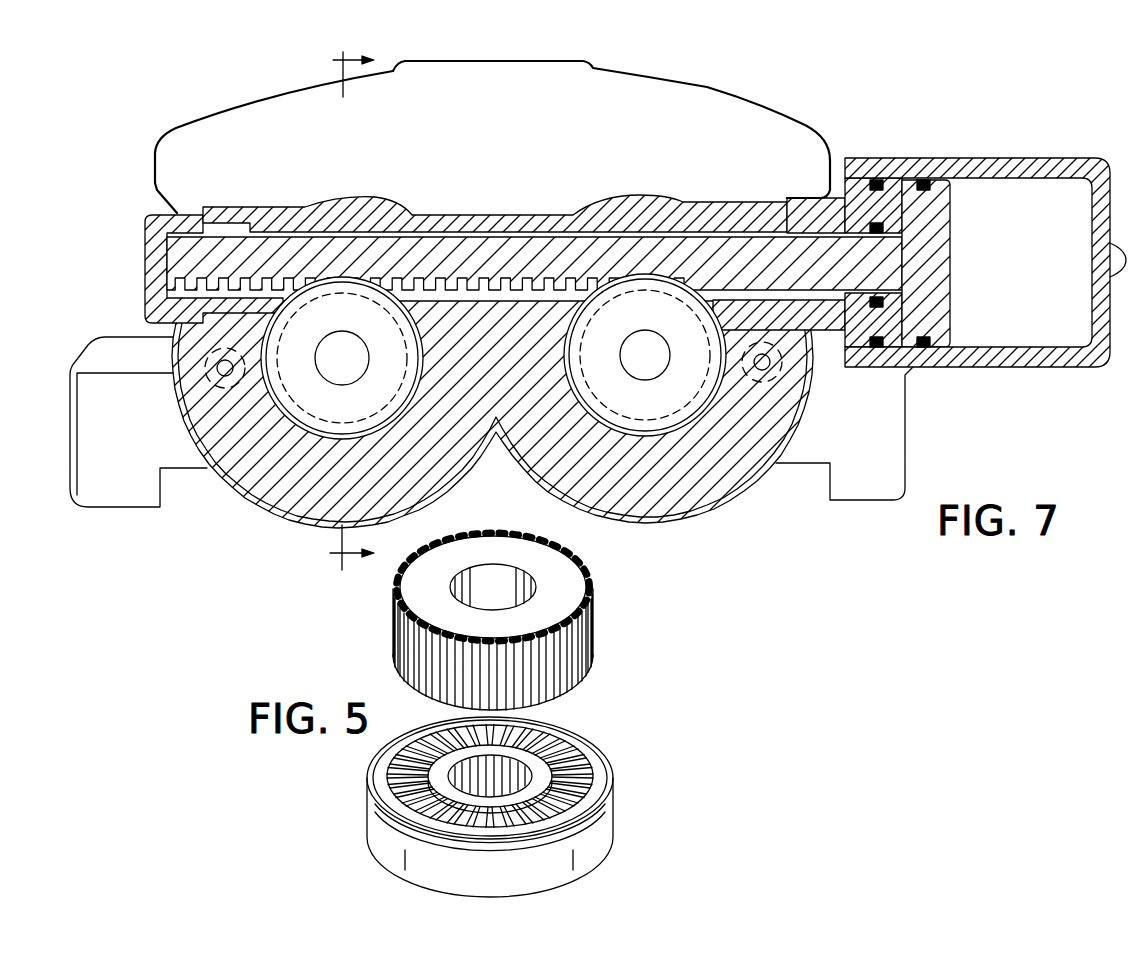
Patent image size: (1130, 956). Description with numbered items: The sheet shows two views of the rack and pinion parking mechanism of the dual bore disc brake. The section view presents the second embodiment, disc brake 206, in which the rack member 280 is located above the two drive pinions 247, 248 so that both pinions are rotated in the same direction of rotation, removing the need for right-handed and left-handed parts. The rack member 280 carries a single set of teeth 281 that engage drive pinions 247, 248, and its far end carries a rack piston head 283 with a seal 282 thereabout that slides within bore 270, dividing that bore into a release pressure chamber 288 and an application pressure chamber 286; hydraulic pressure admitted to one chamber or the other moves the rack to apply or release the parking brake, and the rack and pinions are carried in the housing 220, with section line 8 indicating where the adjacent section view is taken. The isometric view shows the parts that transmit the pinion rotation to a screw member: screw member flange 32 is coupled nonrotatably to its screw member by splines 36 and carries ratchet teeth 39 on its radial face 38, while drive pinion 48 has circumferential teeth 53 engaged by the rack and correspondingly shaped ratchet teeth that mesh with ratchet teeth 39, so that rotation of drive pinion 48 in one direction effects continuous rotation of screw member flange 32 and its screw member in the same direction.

In FIG. 7, the section line 8- 8 is at (341, 308).
In FIG. 7, the disc brake 206 is at (720, 79).
In FIG. 7, the gear housing 220 is at (685, 508).
In FIG. 7, the drive pinion 247 is at (320, 414).
In FIG. 7, the drive pinion 248 is at (623, 412).
In FIG. 7, the bore 270 is at (1056, 184).
In FIG. 7, the rack member 280 is at (607, 247).
In FIG. 7, the teeth 281 is at (523, 283).
In FIG. 7, the seal 282 is at (927, 180).
In FIG. 7, the rack piston head 283 is at (942, 213).
In FIG. 7, the application pressure chamber 286 is at (900, 180).
In FIG. 7, the release pressure chamber 288 is at (1055, 278).
In FIG. 5, the screw member flange 32 is at (622, 817).
In FIG. 5, the splines 36 is at (527, 760).
In FIG. 5, the radial face 38 is at (602, 783).
In FIG. 5, the ratchet teeth 39 is at (583, 760).
In FIG. 5, the drive pinion 48 is at (565, 580).
In FIG. 5, the circumferential teeth 53 is at (597, 622).